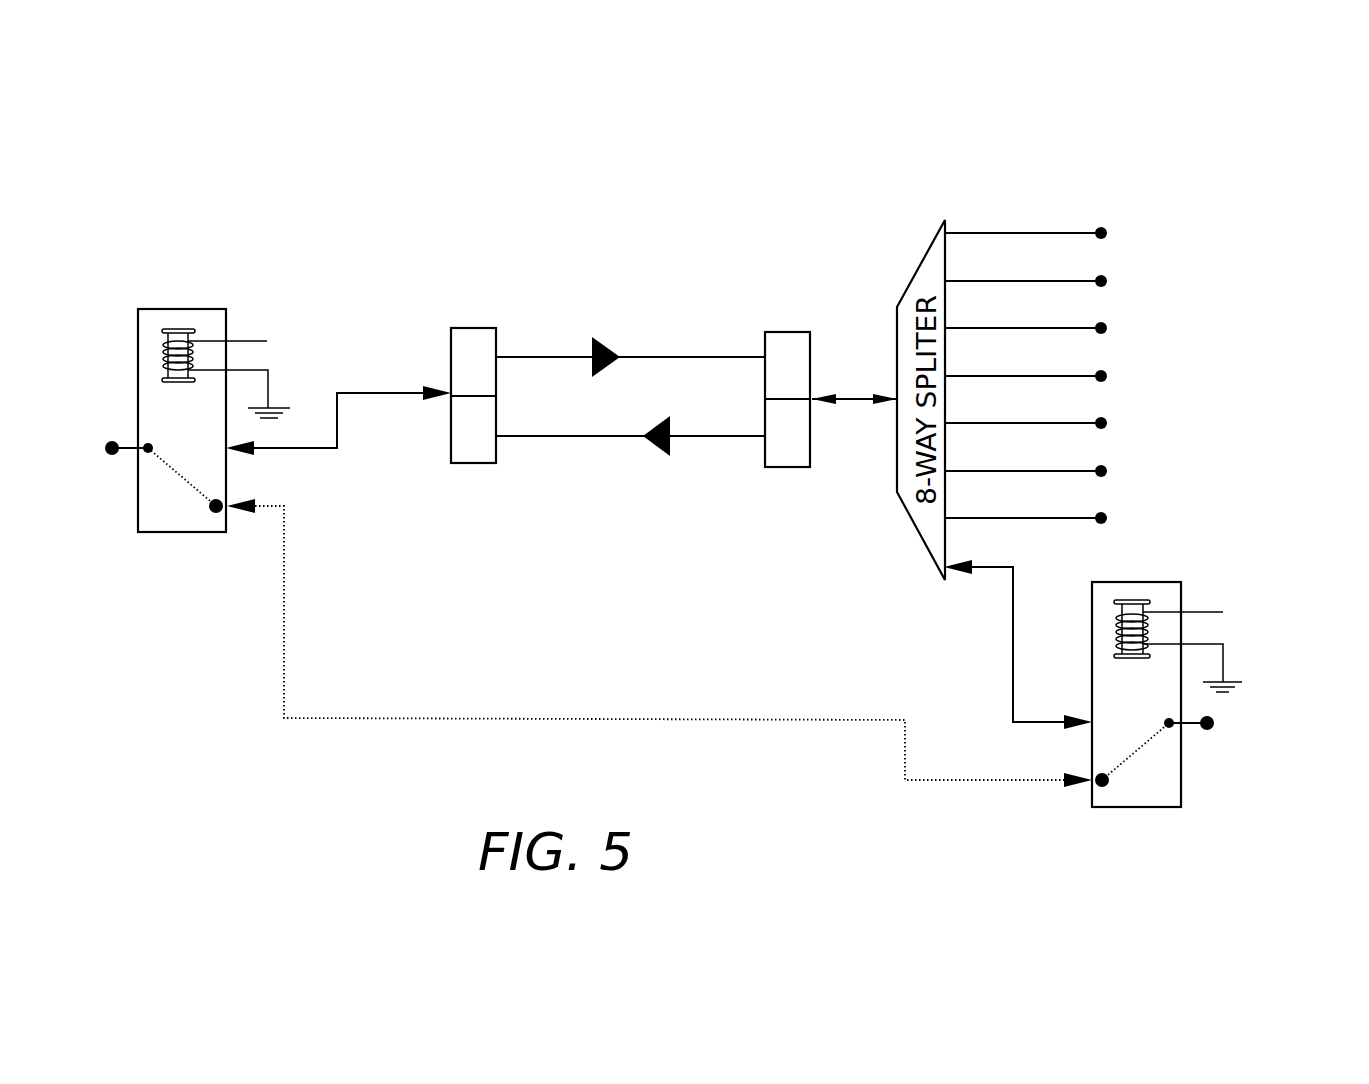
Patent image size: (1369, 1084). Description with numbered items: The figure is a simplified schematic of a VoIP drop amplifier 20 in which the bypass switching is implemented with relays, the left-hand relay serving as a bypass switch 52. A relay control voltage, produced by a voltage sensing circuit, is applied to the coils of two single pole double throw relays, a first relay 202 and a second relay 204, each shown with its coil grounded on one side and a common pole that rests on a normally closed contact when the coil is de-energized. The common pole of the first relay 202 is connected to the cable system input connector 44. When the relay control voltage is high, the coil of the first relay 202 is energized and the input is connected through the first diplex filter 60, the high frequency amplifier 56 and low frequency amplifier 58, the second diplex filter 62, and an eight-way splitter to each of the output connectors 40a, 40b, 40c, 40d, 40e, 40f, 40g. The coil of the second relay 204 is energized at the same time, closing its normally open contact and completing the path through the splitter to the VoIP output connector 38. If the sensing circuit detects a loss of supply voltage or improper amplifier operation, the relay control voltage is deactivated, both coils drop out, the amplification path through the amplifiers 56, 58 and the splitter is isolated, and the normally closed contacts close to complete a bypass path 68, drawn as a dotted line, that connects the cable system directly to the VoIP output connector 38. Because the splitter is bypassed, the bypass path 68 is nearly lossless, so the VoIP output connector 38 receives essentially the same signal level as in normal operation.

The VoIP drop amplifier 20 is at (330, 154).
The bypass switch 52 is at (167, 309).
The first relay 202 is at (173, 532).
The cable system input connector 44 is at (112, 440).
The first diplex filter 60 is at (473, 463).
The high frequency amplifier 56 is at (607, 353).
The low frequency amplifier 58 is at (668, 450).
The second diplex filter 62 is at (788, 467).
The output connector 40a is at (1065, 233).
The output connector 40b is at (1065, 281).
The output connector 40c is at (1064, 328).
The output connector 40d is at (1065, 376).
The output connector 40e is at (1065, 423).
The output connector 40f is at (1062, 471).
The output connector 40g is at (1065, 518).
The second relay 204 is at (1181, 790).
The VoIP output connector 38 is at (1208, 730).
The bypass path 68 is at (333, 718).